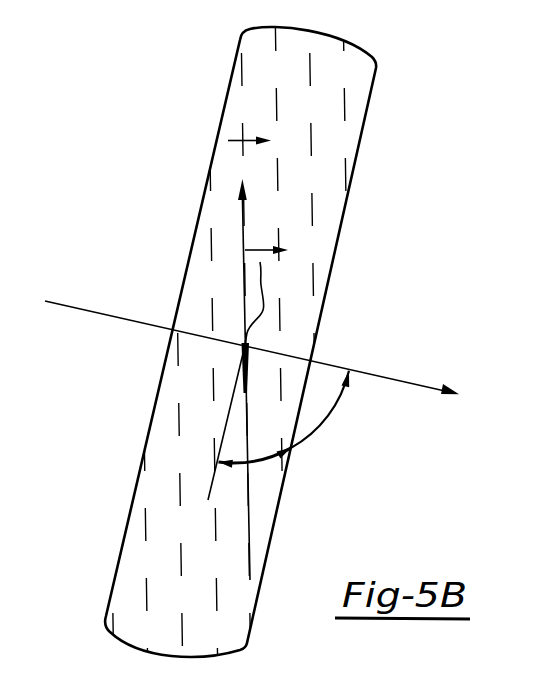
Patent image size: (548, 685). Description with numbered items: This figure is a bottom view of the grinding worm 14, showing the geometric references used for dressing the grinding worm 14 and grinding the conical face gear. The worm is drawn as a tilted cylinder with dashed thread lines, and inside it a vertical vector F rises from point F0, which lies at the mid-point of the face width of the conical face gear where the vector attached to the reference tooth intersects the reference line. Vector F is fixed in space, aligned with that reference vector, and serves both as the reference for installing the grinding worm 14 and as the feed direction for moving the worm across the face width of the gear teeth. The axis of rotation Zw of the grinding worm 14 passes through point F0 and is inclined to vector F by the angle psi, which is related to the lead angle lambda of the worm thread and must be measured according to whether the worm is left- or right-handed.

The grinding worm 14 is at (380, 79).
The vector F is at (249, 359).
The point F0 is at (248, 373).
The axis of rotation Zw is at (260, 347).